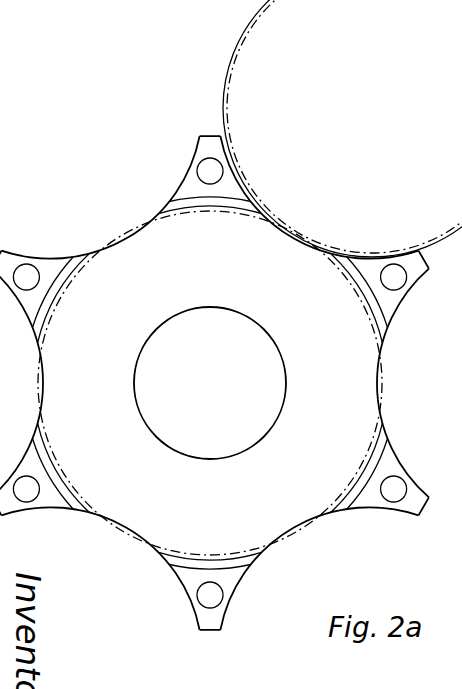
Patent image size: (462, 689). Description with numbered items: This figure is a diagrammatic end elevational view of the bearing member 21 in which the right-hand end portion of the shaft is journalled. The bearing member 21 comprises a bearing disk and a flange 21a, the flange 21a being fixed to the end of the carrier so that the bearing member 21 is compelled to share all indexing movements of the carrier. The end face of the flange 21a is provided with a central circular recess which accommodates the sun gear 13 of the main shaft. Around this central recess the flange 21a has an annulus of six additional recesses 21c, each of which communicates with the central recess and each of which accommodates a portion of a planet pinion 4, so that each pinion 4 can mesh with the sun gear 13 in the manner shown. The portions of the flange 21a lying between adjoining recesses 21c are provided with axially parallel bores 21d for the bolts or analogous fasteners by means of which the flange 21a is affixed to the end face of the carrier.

The planet pinion 4 is at (268, 198).
The sun gear 13 is at (124, 227).
The bearing member 21 is at (128, 516).
The flange 21a is at (204, 143).
The additional recesses 21c is at (291, 530).
The axially parallel bores 21d is at (399, 498).